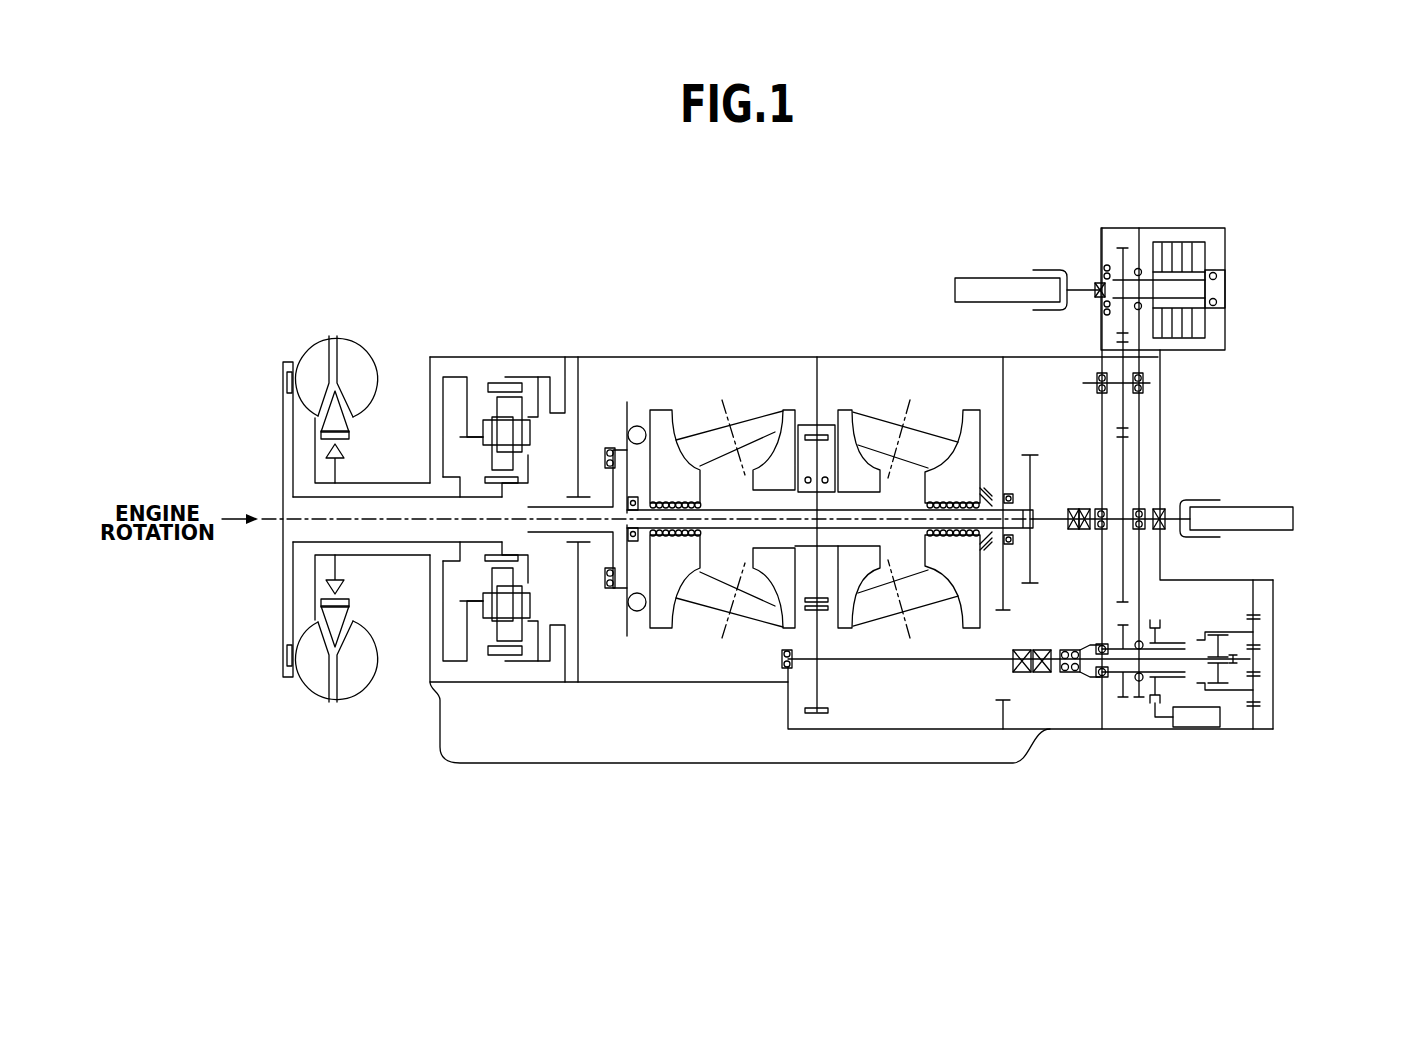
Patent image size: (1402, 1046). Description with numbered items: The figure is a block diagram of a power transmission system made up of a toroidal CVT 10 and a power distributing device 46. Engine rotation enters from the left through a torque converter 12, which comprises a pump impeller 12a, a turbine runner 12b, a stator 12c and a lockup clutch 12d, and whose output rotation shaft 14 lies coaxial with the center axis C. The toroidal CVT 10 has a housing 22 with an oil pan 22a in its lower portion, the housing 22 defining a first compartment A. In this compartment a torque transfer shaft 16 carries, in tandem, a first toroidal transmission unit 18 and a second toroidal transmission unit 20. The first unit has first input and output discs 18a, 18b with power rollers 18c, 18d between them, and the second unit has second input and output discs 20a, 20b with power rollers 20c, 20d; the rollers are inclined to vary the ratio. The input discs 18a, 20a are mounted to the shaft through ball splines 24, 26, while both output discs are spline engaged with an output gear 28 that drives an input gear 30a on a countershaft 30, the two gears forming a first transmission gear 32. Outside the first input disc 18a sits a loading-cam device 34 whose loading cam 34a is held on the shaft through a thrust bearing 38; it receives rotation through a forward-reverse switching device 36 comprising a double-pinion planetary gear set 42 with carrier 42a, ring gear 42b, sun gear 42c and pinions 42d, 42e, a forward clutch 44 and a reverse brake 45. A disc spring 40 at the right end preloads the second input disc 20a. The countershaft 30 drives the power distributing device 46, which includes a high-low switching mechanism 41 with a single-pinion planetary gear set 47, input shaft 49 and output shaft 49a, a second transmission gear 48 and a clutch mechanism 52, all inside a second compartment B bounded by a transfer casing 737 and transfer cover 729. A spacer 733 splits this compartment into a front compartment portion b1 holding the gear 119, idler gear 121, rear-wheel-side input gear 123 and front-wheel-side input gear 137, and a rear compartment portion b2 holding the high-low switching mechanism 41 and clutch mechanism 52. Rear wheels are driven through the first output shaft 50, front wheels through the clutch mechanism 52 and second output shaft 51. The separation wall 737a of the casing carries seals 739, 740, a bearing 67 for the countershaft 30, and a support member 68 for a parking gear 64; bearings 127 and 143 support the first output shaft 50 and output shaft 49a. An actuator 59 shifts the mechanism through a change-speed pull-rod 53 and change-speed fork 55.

The toroidal CVT 10 is at (814, 280).
The torque converter 12 is at (320, 320).
The pump impeller 12a is at (357, 352).
The turbine runner 12b is at (312, 358).
The stator 12c is at (338, 428).
The lockup clutch 12d is at (290, 432).
The output rotation shaft 14 is at (402, 545).
The torque transfer shaft 16 is at (697, 592).
The first toroidal transmission unit 18 is at (707, 410).
The first input disc 18a is at (658, 412).
The first output disc 18b is at (800, 427).
The power roller 18c is at (760, 418).
The power roller 18d is at (782, 660).
The second toroidal transmission unit 20 is at (914, 410).
The second input disc 20a is at (970, 410).
The second output disc 20b is at (846, 410).
The power roller 20c is at (895, 438).
The power roller 20d is at (875, 608).
The housing 22 is at (645, 683).
The oil pan 22a is at (551, 716).
The ball spline 24 is at (702, 502).
The ball spline 26 is at (925, 527).
The output gear 28 is at (815, 436).
The countershaft 30 is at (958, 662).
The input gear 30a is at (818, 714).
The first transmission gear 32 is at (825, 636).
The loading-cam device 34 is at (634, 398).
The loading cam 34a is at (628, 432).
The forward-reverse switching device 36 is at (478, 372).
The thrust bearing 38 is at (632, 565).
The disc spring 40 is at (985, 492).
The high-low switching mechanism 41 is at (1189, 595).
The planetary gear set 42 is at (480, 632).
The carrier 42a is at (466, 437).
The ring gear 42b is at (497, 382).
The sun gear 42c is at (500, 483).
The pinion 42d is at (512, 400).
The pinion 42e is at (508, 445).
The forward clutch 44 is at (452, 380).
The reverse brake 45 is at (565, 375).
The power distributing device 46 is at (1203, 729).
The single-pinion type planetary gear set 47 is at (1265, 604).
The second transmission gear 48 is at (1160, 455).
The input shaft 49 is at (1205, 690).
The output shaft 49a is at (1122, 643).
The first output shaft 50 is at (1176, 517).
The second output shaft 51 is at (1080, 290).
The clutch mechanism 52 is at (1190, 229).
The change-speed pull-rod 53 is at (1168, 727).
The change-speed fork 55 is at (1153, 706).
The actuator 59 is at (1212, 718).
The parking gear 64 is at (1026, 452).
The bearing 67 is at (1082, 673).
The support member 68 is at (1048, 518).
The gear 119 is at (1120, 700).
The idler gear 121 is at (1125, 356).
The rear-wheel-side input gear 123 is at (1140, 588).
The bearing 127 is at (1100, 510).
The front-wheel-side input gear 137 is at (1120, 238).
The bearing 143 is at (1095, 648).
The transfer cover 729 is at (1273, 640).
The spacer 733 is at (1143, 441).
The transfer casing 737 is at (1125, 728).
The separation wall 737a is at (1098, 410).
The seal 739 is at (1086, 531).
The seal 740 is at (1040, 673).
The first compartment A is at (940, 378).
The second compartment B is at (1232, 597).
The center axis C is at (418, 483).
The front compartment portion b1 is at (1130, 403).
The rear compartment portion b2 is at (1150, 407).